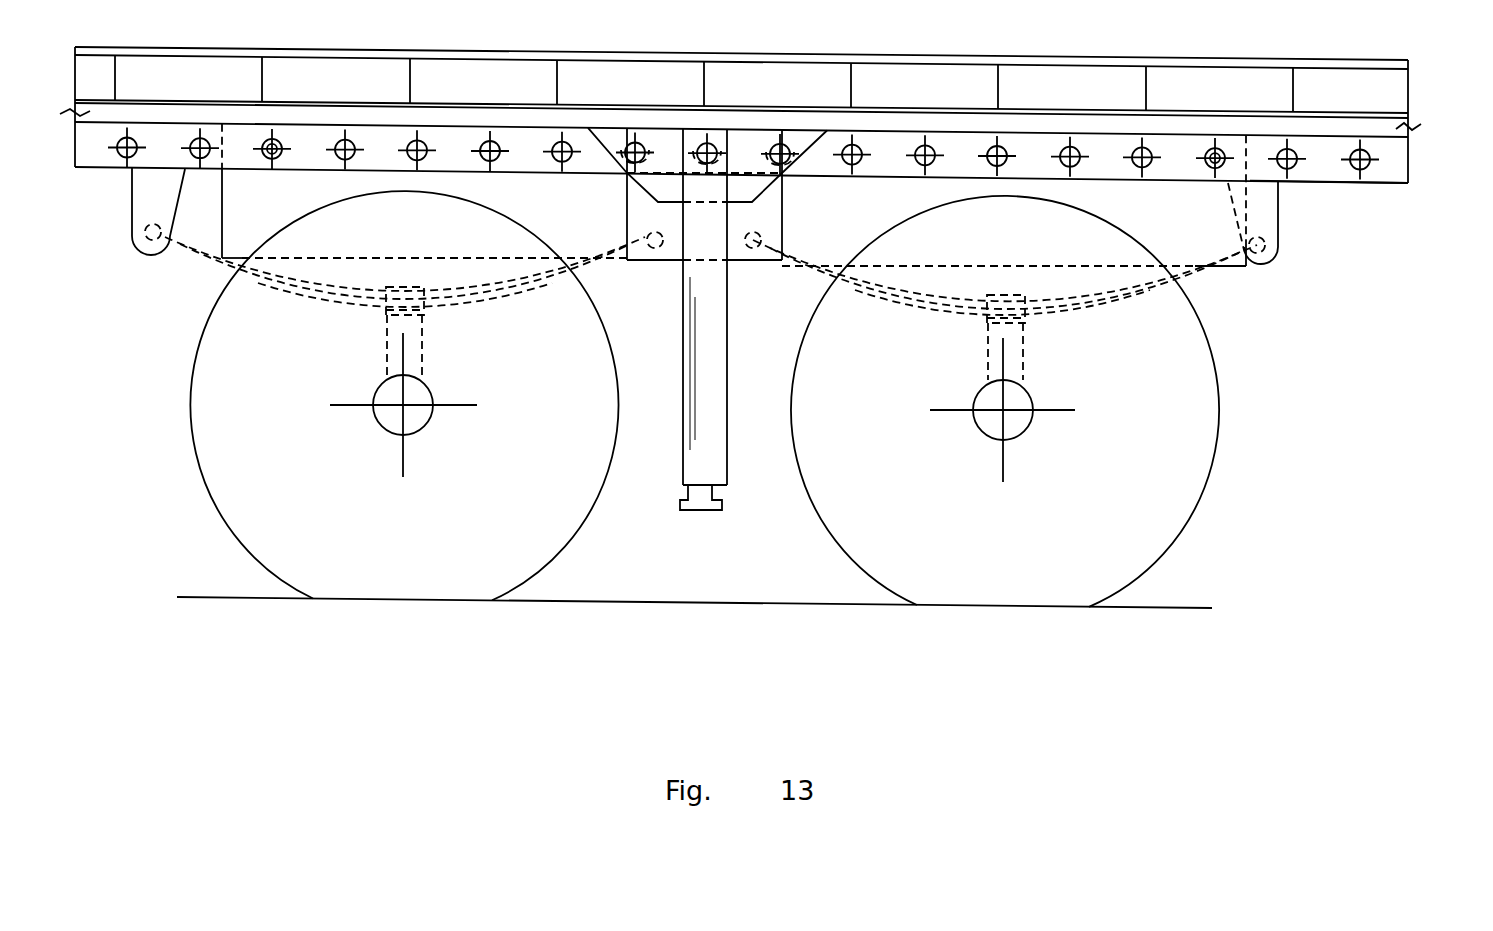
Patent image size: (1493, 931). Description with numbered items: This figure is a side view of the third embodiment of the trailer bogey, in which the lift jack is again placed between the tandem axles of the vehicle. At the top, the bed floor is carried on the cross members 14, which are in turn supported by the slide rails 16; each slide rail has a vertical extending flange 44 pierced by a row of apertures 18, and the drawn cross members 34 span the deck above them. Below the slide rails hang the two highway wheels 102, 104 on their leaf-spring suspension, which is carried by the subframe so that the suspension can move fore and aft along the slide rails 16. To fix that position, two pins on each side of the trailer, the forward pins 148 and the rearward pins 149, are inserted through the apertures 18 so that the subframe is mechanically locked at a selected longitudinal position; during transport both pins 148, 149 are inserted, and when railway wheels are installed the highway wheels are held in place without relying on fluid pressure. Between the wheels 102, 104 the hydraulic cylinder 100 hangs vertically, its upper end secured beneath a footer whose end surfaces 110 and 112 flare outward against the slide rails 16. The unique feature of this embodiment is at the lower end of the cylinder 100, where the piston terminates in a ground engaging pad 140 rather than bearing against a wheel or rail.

The cross members 14 is at (872, 55).
The cross members 34 is at (412, 76).
The slide rails 16 is at (888, 153).
The apertures 18 is at (1151, 156).
The vertical extending flange 44 is at (1328, 175).
The forward pins 148 is at (270, 158).
The rearward pins 149 is at (1209, 170).
The end surface 110 is at (589, 128).
The end surface 112 is at (826, 130).
The hydraulic cylinder 100 is at (713, 317).
The ground engaging pad 140 is at (703, 511).
The wheel 102 is at (557, 523).
The wheel 104 is at (1160, 545).